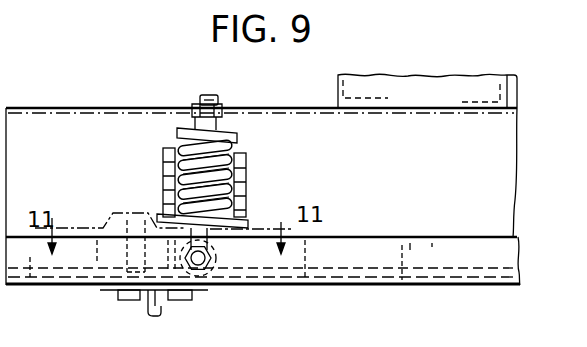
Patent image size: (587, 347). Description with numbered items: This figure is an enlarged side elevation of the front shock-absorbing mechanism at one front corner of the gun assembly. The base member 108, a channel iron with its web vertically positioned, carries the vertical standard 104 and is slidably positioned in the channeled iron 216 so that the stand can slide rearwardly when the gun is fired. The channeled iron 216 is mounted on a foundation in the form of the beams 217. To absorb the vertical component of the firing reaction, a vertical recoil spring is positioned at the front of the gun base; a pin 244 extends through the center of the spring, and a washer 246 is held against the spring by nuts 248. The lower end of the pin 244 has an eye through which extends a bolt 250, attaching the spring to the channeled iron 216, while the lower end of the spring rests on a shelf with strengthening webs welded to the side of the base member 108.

The standard 104 is at (360, 77).
The base member 108 is at (108, 107).
The channeled iron 216 is at (395, 238).
The beam 217 is at (150, 305).
The pin 244 is at (218, 100).
The washer 246 is at (238, 136).
The nuts 248 is at (222, 121).
The bolt 250 is at (212, 256).